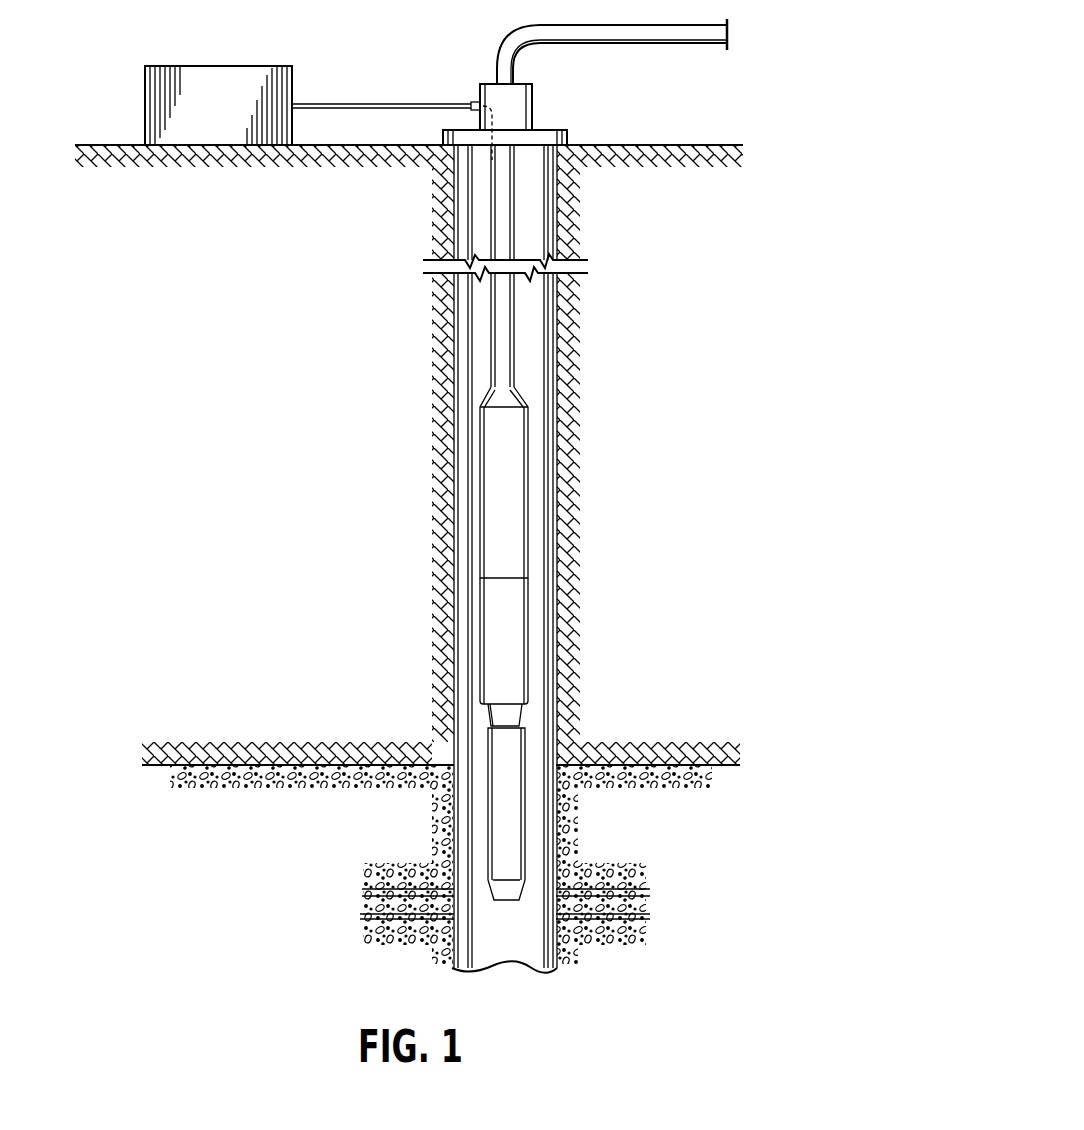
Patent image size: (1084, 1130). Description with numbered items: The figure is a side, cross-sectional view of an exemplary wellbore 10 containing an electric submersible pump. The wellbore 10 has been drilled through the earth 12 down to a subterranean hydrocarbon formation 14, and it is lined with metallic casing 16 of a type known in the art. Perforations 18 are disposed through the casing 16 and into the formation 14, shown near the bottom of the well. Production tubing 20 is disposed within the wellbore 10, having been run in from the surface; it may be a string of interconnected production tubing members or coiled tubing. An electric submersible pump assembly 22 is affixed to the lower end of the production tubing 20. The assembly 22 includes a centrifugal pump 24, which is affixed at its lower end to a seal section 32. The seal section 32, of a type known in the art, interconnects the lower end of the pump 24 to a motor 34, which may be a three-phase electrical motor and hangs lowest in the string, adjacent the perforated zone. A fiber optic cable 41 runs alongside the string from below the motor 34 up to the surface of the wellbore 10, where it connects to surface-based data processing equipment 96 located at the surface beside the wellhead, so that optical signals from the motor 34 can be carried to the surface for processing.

The wellbore 10 is at (563, 395).
The earth 12 is at (302, 393).
The subterranean hydrocarbon formation 14 is at (325, 841).
The metallic casing 16 is at (561, 319).
The perforations 18 is at (362, 889).
The production tubing 20 is at (510, 215).
The electric submersible pump assembly 22 is at (476, 483).
The centrifugal pump 24 is at (522, 487).
The seal section 32 is at (522, 630).
The motor 34 is at (522, 816).
The fiber optic cable 41 is at (486, 343).
The surface-based data processing equipment 96 is at (230, 66).